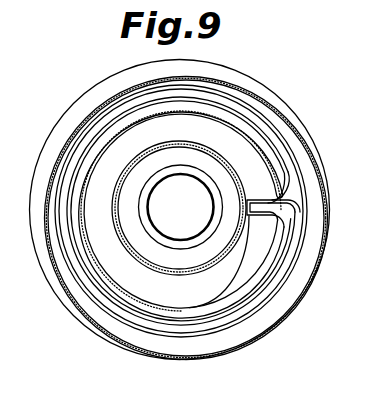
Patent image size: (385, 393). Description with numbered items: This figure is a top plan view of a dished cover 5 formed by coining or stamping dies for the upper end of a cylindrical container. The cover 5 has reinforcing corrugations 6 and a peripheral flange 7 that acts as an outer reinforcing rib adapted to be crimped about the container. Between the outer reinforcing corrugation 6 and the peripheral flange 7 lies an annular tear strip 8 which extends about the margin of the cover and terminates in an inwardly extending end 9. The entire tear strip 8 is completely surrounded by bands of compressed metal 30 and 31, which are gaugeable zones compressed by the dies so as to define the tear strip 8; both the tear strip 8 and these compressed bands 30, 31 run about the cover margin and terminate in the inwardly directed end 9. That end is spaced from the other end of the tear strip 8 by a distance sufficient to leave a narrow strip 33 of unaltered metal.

The dished cover 5 is at (73, 101).
The reinforcing corrugations 6 is at (93, 265).
The peripheral flange 7 is at (384, 154).
The annular tear strip 8 is at (248, 116).
The inwardly extending end 9 is at (260, 205).
The band of compressed metal 30 is at (212, 91).
The band of compressed metal 31 is at (123, 110).
The narrow strip of unaltered metal 33 is at (304, 205).